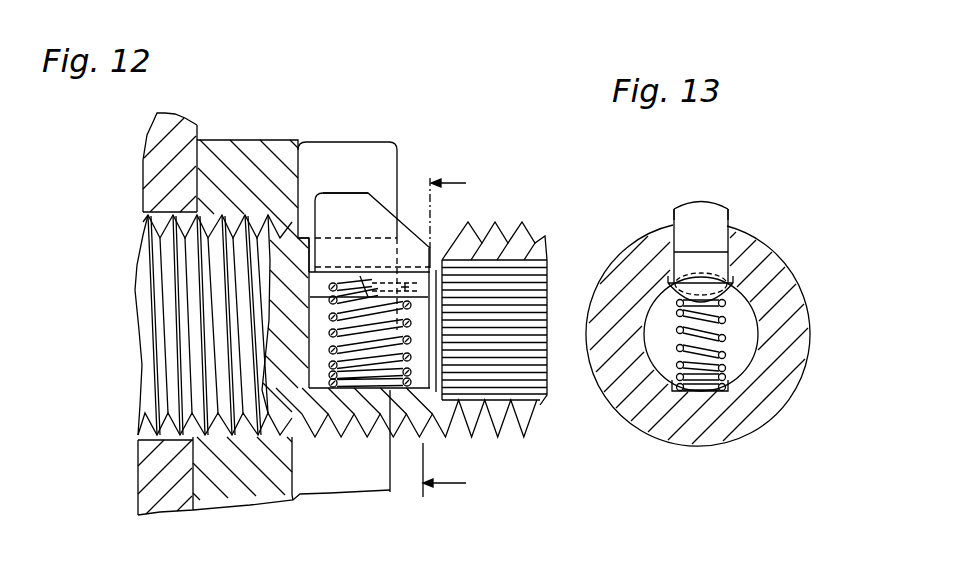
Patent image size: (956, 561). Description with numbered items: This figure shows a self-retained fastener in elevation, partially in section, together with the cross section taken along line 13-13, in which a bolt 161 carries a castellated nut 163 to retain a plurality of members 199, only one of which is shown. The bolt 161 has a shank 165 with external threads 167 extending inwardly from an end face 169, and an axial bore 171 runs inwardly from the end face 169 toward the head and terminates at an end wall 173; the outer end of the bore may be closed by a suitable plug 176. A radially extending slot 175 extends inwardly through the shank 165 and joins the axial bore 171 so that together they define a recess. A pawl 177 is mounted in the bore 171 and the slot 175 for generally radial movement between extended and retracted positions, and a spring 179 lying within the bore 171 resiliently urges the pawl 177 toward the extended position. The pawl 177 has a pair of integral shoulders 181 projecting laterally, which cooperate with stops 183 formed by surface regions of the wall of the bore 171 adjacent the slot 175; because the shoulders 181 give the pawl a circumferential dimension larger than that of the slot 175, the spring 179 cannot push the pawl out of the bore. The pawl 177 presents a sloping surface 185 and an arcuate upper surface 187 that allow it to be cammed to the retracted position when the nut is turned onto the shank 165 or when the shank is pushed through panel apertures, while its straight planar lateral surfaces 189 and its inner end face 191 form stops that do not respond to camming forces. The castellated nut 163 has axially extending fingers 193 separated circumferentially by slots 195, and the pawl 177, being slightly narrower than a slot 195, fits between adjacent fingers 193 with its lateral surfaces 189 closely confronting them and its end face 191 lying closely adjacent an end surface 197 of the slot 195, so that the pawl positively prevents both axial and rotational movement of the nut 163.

In FIG. 12, the line 13- 13 is at (458, 336).
In FIG. 12, the bolt 161 is at (136, 275).
In FIG. 12, the castellated nut 163 is at (270, 138).
In FIG. 12, the shank 165 is at (140, 338).
In FIG. 13, the shank 165 is at (757, 407).
In FIG. 12, the external threads 167 is at (156, 432).
In FIG. 12, the end face 169 is at (548, 256).
In FIG. 12, the axial bore 171 is at (488, 398).
In FIG. 13, the axial bore 171 is at (752, 312).
In FIG. 12, the end wall 173 is at (311, 368).
In FIG. 12, the radially extending slot 175 is at (440, 258).
In FIG. 13, the radially extending slot 175 is at (686, 245).
In FIG. 12, the plug 176 is at (530, 368).
In FIG. 12, the pawl 177 is at (396, 208).
In FIG. 13, the pawl 177 is at (736, 206).
In FIG. 12, the spring 179 is at (390, 387).
In FIG. 13, the spring 179 is at (697, 388).
In FIG. 12, the shoulders 181 is at (320, 298).
In FIG. 13, the shoulders 181 is at (677, 306).
In FIG. 13, the stops 183 is at (670, 280).
In FIG. 12, the sloping surface 185 is at (400, 203).
In FIG. 13, the arcuate upper surface 187 is at (687, 206).
In FIG. 13, the lateral surfaces 189 is at (673, 213).
In FIG. 12, the inner end face 191 is at (318, 190).
In FIG. 12, the fingers 193 is at (362, 163).
In FIG. 12, the slots 195 is at (380, 182).
In FIG. 12, the end surface 197 is at (302, 222).
In FIG. 12, the members 199 is at (180, 138).